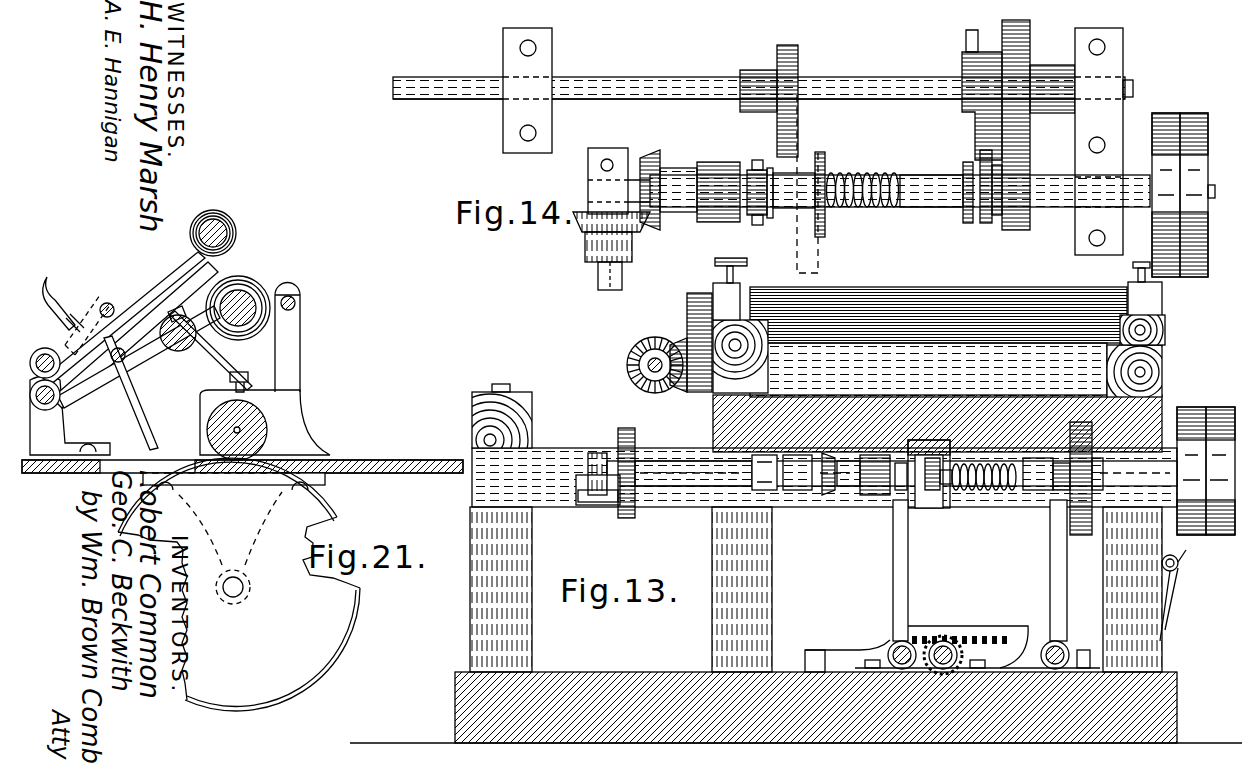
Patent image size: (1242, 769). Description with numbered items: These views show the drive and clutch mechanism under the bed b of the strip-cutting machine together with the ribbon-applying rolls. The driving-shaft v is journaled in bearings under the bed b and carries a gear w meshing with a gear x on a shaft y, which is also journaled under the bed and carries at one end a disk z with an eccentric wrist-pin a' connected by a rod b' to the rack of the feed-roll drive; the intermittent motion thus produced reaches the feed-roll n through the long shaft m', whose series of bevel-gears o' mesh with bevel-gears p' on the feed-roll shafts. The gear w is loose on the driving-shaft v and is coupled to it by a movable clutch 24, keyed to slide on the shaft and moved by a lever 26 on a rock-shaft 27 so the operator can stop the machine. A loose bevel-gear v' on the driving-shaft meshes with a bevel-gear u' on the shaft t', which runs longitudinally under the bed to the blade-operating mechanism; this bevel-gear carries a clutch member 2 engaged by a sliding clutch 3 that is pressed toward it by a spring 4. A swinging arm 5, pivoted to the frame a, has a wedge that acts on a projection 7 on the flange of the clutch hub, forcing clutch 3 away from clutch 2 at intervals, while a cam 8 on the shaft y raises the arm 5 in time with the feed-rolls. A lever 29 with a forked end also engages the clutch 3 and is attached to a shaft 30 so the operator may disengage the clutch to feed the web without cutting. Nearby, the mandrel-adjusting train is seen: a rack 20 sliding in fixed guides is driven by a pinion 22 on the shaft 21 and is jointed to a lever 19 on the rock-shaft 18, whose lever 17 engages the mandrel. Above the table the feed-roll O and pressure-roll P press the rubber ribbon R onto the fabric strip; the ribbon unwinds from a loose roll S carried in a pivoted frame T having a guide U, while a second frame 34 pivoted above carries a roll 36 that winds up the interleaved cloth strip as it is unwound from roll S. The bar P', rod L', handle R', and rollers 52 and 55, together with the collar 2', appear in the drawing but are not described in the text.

In FIG. 14, the clutch member 2 is at (718, 182).
In FIG. 13, the clutch member 2 is at (863, 497).
In FIG. 13, the collar 2' is at (964, 457).
In FIG. 14, the sliding clutch 3 is at (786, 212).
In FIG. 13, the sliding clutch 3 is at (915, 496).
In FIG. 14, the spring 4 is at (852, 187).
In FIG. 13, the spring 4 is at (985, 496).
In FIG. 13, the swinging arm 5 is at (950, 446).
In FIG. 14, the projection 7 is at (810, 184).
In FIG. 14, the cam 8 is at (777, 118).
In FIG. 13, the cam 8 is at (905, 445).
In FIG. 13, the lever 17 is at (1192, 549).
In FIG. 13, the rock-shaft 18 is at (1183, 564).
In FIG. 13, the lever 19 is at (1180, 604).
In FIG. 13, the rack 20 is at (950, 626).
In FIG. 13, the shaft 21 is at (965, 655).
In FIG. 13, the pinion 22 is at (955, 642).
In FIG. 14, the movable clutch 24 is at (966, 212).
In FIG. 13, the movable clutch 24 is at (1050, 496).
In FIG. 14, the lever 26 is at (978, 158).
In FIG. 13, the lever 26 is at (1055, 576).
In FIG. 13, the rock-shaft 27 is at (1070, 650).
In FIG. 14, the lever 29 is at (756, 165).
In FIG. 13, the lever 29 is at (893, 590).
In FIG. 13, the shaft 30 is at (888, 648).
In FIG. 21, the frame 34 is at (136, 296).
In FIG. 21, the roll 36 is at (237, 238).
In FIG. 21, the roller 52 is at (62, 410).
In FIG. 21, the roller 55 is at (40, 350).
In FIG. 13, the frame a is at (932, 325).
In FIG. 13, the wrist-pin a' is at (598, 514).
In FIG. 13, the bed b is at (962, 372).
In FIG. 13, the rod b' is at (596, 463).
In FIG. 13, the long shaft m' is at (644, 388).
In FIG. 13, the feed-roll n is at (890, 300).
In FIG. 13, the bevel-gear o' is at (644, 365).
In FIG. 13, the bevel-gear p' is at (691, 357).
In FIG. 14, the shaft t' is at (618, 276).
In FIG. 14, the bevel-gear u' is at (623, 237).
In FIG. 14, the driving-shaft v is at (923, 172).
In FIG. 13, the driving-shaft v is at (1024, 493).
In FIG. 14, the loose bevel-gear v' is at (668, 185).
In FIG. 13, the loose bevel-gear v' is at (821, 496).
In FIG. 14, the gear w is at (1008, 204).
In FIG. 13, the gear w is at (1100, 495).
In FIG. 14, the gear x is at (1030, 140).
In FIG. 13, the gear x is at (1085, 537).
In FIG. 14, the shaft y is at (926, 97).
In FIG. 13, the shaft y is at (690, 490).
In FIG. 13, the disk z is at (636, 446).
In FIG. 21, the link L' is at (140, 393).
In FIG. 21, the feed-roll O is at (239, 584).
In FIG. 21, the pressure-roll P is at (265, 372).
In FIG. 21, the bar P' is at (135, 335).
In FIG. 21, the ribbon R is at (208, 348).
In FIG. 21, the handle R' is at (64, 299).
In FIG. 21, the roll S is at (270, 292).
In FIG. 21, the frame T is at (140, 368).
In FIG. 21, the guide U is at (230, 374).